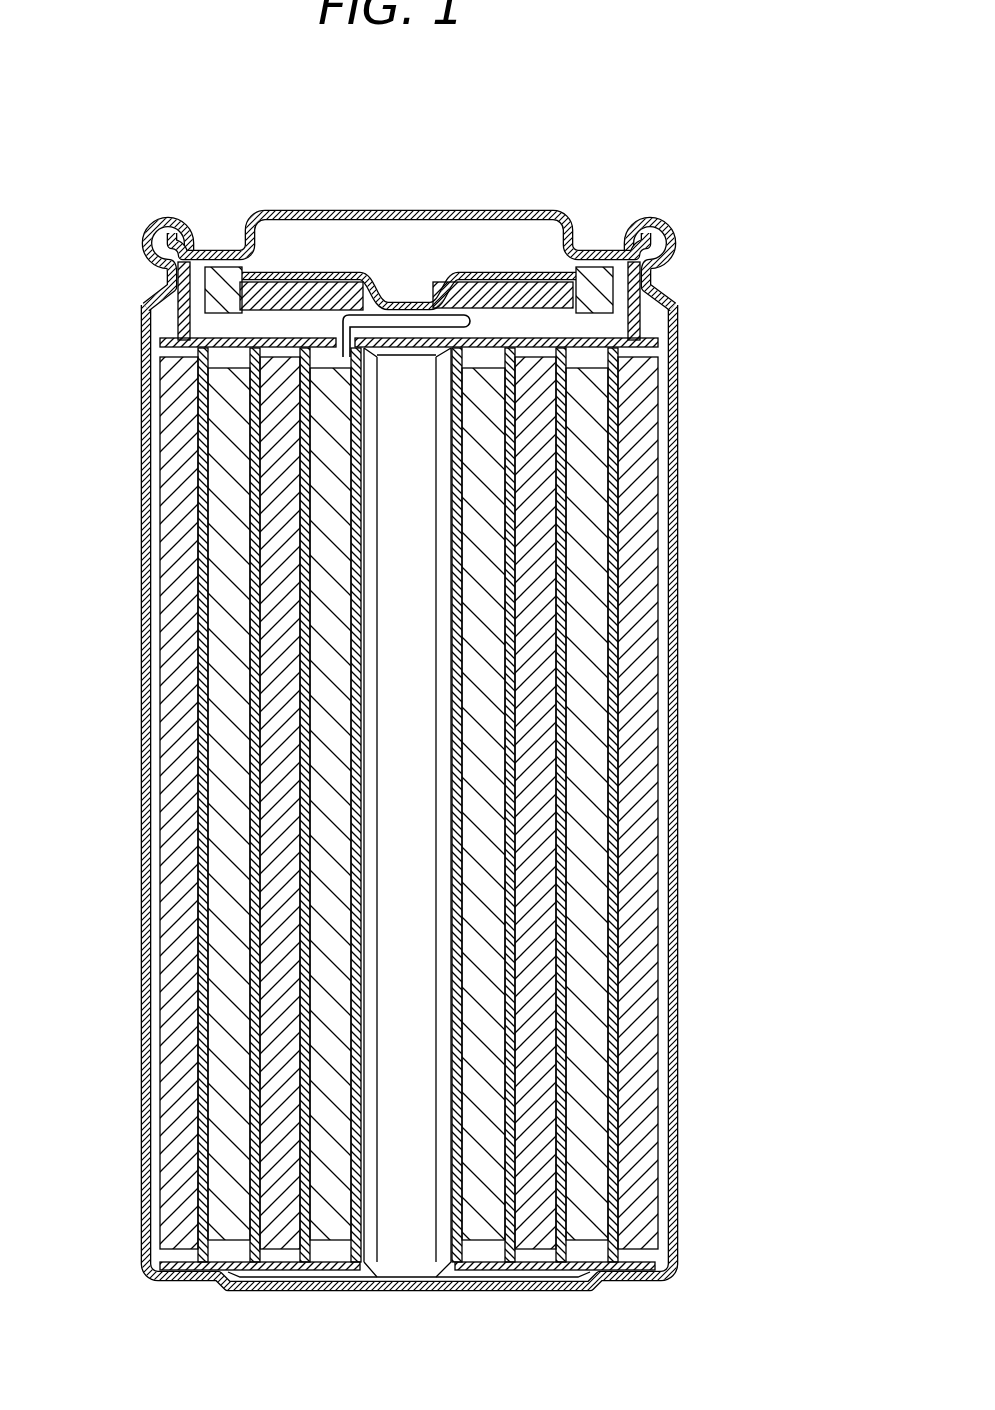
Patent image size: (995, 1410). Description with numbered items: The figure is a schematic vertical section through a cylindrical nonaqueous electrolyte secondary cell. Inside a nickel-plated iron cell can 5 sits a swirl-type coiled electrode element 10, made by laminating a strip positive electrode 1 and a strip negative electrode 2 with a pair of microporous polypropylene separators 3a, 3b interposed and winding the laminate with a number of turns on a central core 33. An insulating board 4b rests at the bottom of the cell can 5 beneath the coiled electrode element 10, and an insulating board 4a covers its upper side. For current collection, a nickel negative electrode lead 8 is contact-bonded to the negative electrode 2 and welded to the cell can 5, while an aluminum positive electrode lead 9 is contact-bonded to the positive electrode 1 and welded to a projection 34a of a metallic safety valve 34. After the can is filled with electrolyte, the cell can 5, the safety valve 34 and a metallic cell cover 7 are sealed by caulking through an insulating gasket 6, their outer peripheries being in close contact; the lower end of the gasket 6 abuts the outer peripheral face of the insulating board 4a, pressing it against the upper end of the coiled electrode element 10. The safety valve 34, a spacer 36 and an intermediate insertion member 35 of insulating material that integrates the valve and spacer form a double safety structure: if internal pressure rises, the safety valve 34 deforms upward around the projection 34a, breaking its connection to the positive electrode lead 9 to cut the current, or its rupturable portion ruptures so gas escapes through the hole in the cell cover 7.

The positive electrode 1 is at (218, 642).
The negative electrode 2 is at (205, 888).
The separator 3a is at (507, 540).
The separator 3b is at (357, 523).
The insulating board 4a is at (155, 312).
The insulating board 4b is at (632, 1250).
The cell can 5 is at (145, 776).
The insulating gasket 6 is at (172, 217).
The cell cover 7 is at (400, 208).
The negative electrode lead 8 is at (366, 1278).
The positive electrode lead 9 is at (670, 302).
The coiled electrode element 10 is at (676, 918).
The core 33 is at (445, 1250).
The safety valve 34 is at (557, 208).
The projection 34a is at (417, 302).
The intermediate insertion member 35 is at (211, 266).
The spacer 36 is at (273, 300).